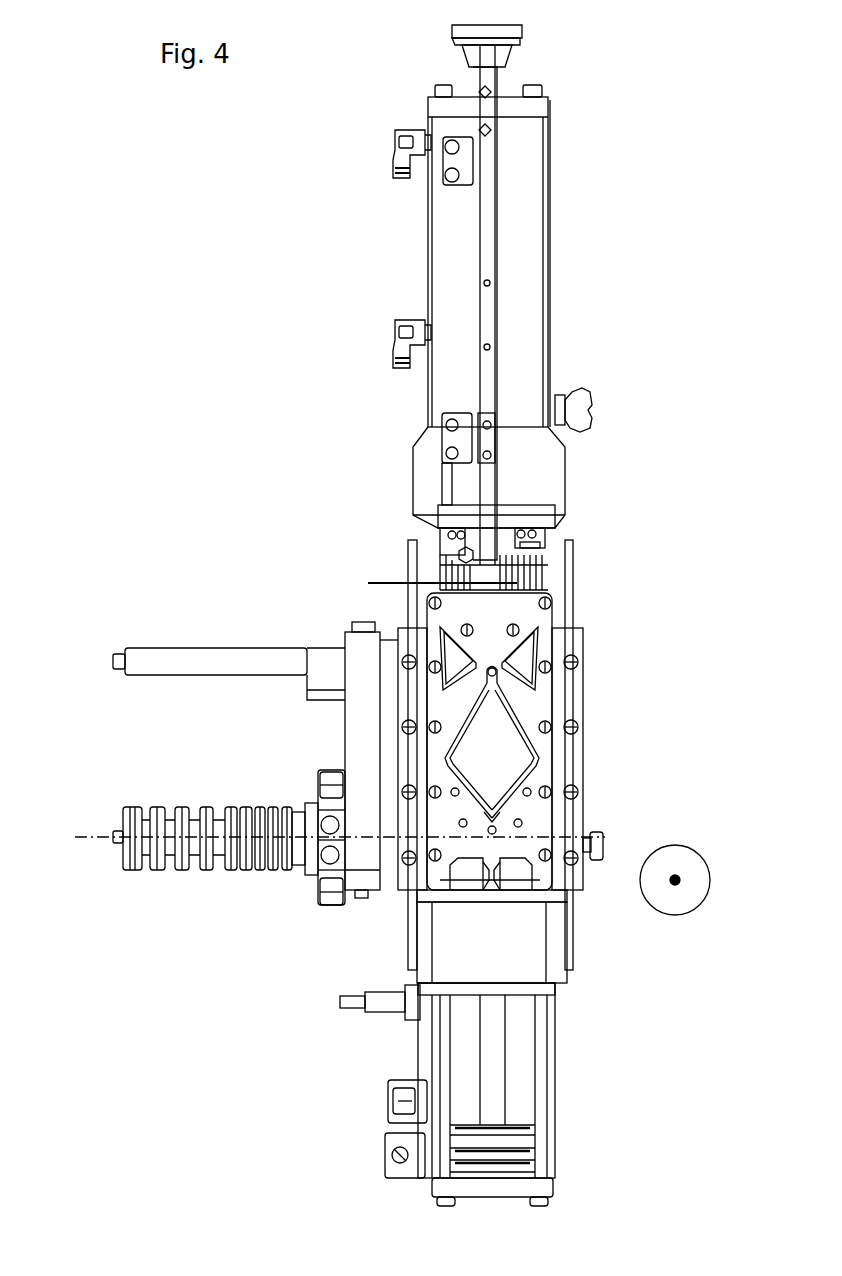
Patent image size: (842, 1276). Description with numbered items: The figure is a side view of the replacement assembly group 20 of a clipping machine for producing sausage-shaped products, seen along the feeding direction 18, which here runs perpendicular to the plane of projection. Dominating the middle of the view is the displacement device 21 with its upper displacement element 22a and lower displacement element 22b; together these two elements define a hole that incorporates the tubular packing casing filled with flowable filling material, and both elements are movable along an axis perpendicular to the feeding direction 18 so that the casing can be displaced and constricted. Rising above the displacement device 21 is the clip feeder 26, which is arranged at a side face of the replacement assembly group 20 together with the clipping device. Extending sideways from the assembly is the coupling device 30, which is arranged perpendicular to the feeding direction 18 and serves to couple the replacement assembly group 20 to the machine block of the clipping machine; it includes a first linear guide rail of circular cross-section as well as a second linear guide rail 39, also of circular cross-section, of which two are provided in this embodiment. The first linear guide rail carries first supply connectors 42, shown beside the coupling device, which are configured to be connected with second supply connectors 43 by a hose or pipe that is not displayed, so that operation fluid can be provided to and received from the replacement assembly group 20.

The feeding direction 18 is at (679, 853).
The replacement assembly group 20 is at (200, 280).
The displacement device 21 is at (606, 612).
The upper displacement element 22a is at (455, 695).
The lower displacement element 22b is at (522, 810).
The clip feeder 26 is at (493, 325).
The coupling device 30 is at (157, 768).
The second linear guide rail 39 is at (205, 655).
The first supply connector 42 is at (328, 788).
The second supply connector 43 is at (392, 330).